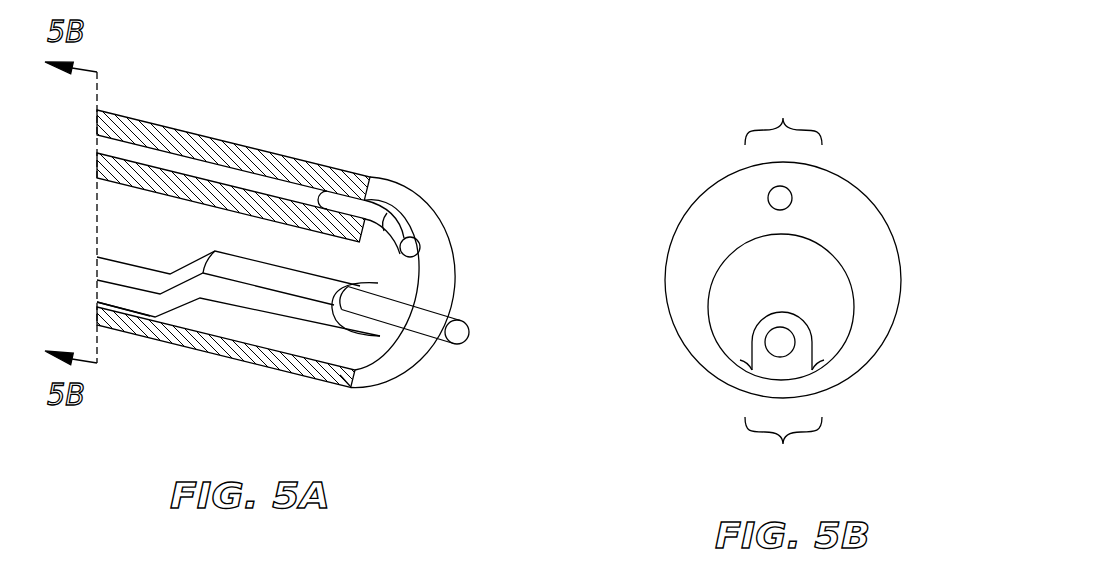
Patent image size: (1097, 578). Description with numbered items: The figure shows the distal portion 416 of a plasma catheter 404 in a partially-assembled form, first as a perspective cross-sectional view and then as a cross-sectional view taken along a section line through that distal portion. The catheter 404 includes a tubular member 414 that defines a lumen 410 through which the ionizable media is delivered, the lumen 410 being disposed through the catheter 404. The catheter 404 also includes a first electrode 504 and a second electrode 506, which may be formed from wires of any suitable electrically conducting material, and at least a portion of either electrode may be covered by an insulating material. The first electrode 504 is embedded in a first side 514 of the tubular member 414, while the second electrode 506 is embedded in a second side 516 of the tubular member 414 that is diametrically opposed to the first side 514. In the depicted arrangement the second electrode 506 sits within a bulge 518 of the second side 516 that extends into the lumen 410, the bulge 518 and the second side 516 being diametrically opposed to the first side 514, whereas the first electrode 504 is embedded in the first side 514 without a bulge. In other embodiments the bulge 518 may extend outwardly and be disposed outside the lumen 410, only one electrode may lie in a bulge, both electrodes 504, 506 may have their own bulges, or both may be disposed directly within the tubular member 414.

In FIG. 5A, the plasma catheter 404 is at (276, 227).
In FIG. 5B, the plasma catheter 404 is at (770, 246).
In FIG. 5A, the lumen 410 is at (392, 279).
In FIG. 5B, the lumen 410 is at (817, 283).
In FIG. 5A, the tubular member 414 is at (403, 282).
In FIG. 5B, the tubular member 414 is at (872, 233).
In FIG. 5A, the distal portion 416 is at (381, 413).
In FIG. 5A, the first electrode 504 is at (411, 248).
In FIG. 5B, the first electrode 504 is at (793, 199).
In FIG. 5A, the second electrode 506 is at (460, 333).
In FIG. 5B, the second electrode 506 is at (787, 342).
In FIG. 5A, the first side 514 is at (260, 165).
In FIG. 5B, the first side 514 is at (783, 118).
In FIG. 5A, the second side 516 is at (132, 332).
In FIG. 5B, the second side 516 is at (783, 444).
In FIG. 5A, the bulge 518 is at (356, 309).
In FIG. 5B, the bulge 518 is at (737, 308).